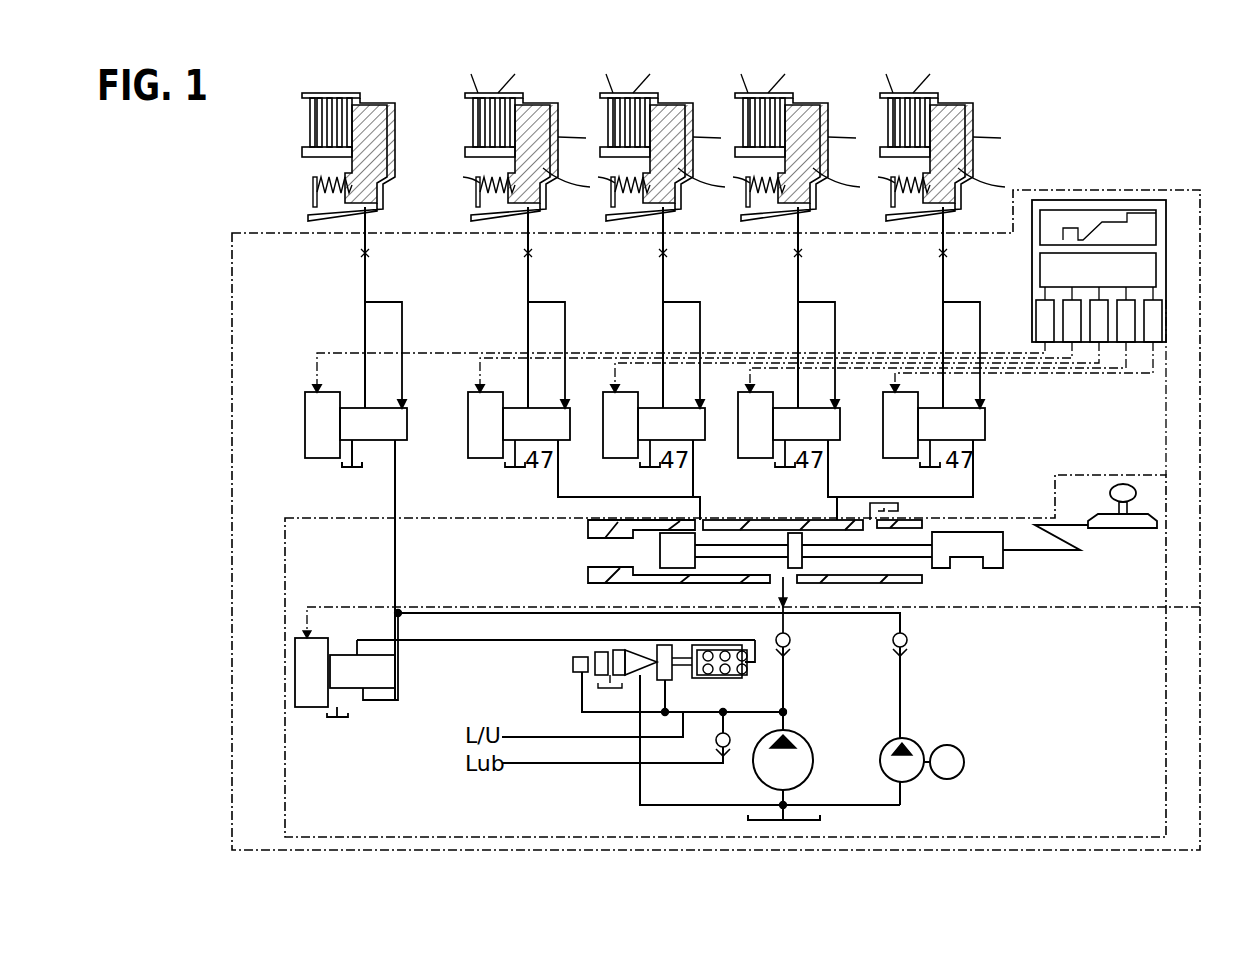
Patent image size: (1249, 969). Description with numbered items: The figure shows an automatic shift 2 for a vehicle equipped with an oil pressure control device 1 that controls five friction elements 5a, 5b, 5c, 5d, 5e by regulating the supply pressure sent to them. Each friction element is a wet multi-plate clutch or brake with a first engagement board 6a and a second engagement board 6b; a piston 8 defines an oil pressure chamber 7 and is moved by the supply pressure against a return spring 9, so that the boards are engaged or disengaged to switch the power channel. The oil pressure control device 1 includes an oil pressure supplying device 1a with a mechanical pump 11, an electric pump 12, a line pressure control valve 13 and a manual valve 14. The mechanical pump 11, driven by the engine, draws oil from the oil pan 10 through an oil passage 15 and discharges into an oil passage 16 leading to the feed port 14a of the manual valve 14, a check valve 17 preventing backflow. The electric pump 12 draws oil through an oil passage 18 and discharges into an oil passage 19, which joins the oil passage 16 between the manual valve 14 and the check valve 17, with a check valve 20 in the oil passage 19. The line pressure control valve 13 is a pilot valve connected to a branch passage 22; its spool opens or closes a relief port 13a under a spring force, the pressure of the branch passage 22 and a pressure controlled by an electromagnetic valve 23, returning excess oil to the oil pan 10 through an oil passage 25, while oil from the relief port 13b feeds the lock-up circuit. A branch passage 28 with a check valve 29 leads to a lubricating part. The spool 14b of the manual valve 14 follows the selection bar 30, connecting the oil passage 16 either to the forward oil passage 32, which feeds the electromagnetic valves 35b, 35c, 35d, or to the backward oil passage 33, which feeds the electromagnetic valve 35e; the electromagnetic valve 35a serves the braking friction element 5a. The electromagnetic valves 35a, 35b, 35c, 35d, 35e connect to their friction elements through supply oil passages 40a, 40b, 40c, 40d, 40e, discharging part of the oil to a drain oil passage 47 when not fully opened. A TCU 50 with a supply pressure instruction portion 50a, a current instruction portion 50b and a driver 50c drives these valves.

The oil pressure control device 1 is at (1200, 832).
The oil pressure supplying device 1a is at (1167, 725).
The automatic shift 2 is at (609, 137).
The friction element 5a is at (365, 137).
The friction element 5b is at (541, 93).
The friction element 5c is at (676, 93).
The friction element 5d is at (811, 93).
The friction element 5e is at (956, 93).
The first engagement board 6a is at (315, 93).
The second engagement board 6b is at (335, 93).
The oil pressure chamber 7 is at (395, 137).
The piston 8 is at (380, 168).
The return spring 9 is at (317, 183).
The oil pan 10 is at (822, 820).
The mechanical pump 11 is at (797, 753).
The electric pump 12 is at (917, 743).
The line pressure control valve 13 is at (556, 681).
The relief port 13a is at (637, 678).
The relief port 13b is at (685, 675).
The manual valve 14 is at (801, 571).
The feed port 14a is at (790, 578).
The spool 14b is at (667, 550).
The oil passage 15 is at (786, 803).
The oil passage 16 is at (783, 692).
The check valve 17 is at (776, 637).
The oil passage 18 is at (903, 801).
The oil passage 19 is at (903, 692).
The check valve 20 is at (908, 640).
The branch passage 22 is at (780, 711).
The electromagnetic valve 23 is at (357, 680).
The oil passage 25 is at (640, 806).
The branch passage 28 is at (567, 765).
The check valve 29 is at (729, 747).
The selection bar 30 is at (1127, 524).
The forward oil passage 32 is at (698, 506).
The backward oil passage 33 is at (828, 516).
The electromagnetic valve 35a is at (318, 453).
The electromagnetic valve 35b is at (481, 453).
The electromagnetic valve 35c is at (616, 453).
The electromagnetic valve 35d is at (751, 453).
The electromagnetic valve 35e is at (896, 453).
The supply oil passage 40a is at (365, 283).
The supply oil passage 40b is at (528, 283).
The supply oil passage 40c is at (663, 283).
The supply oil passage 40d is at (798, 283).
The supply oil passage 40e is at (943, 283).
The drain oil passage 47 is at (366, 456).
The TCU 50 is at (1128, 278).
The supply pressure instruction portion 50a is at (1137, 210).
The current instruction portion 50b is at (1148, 258).
The driver 50c is at (1050, 335).